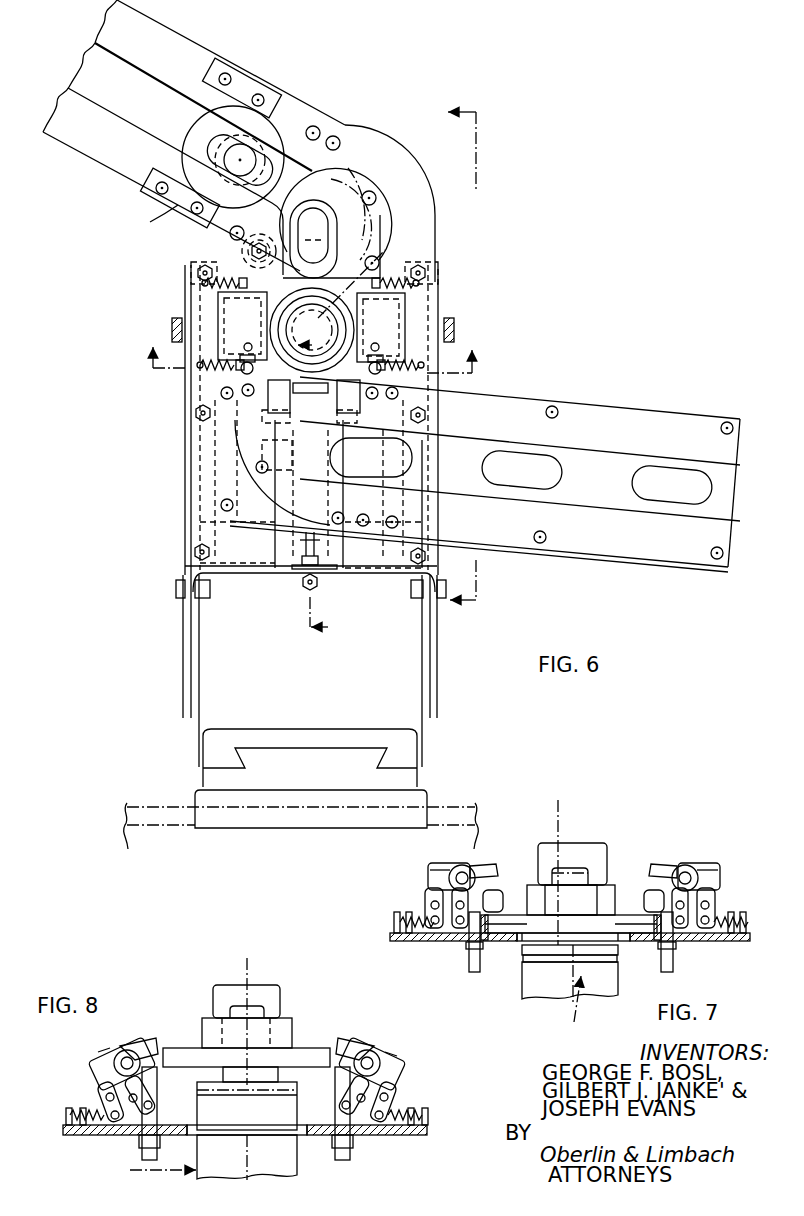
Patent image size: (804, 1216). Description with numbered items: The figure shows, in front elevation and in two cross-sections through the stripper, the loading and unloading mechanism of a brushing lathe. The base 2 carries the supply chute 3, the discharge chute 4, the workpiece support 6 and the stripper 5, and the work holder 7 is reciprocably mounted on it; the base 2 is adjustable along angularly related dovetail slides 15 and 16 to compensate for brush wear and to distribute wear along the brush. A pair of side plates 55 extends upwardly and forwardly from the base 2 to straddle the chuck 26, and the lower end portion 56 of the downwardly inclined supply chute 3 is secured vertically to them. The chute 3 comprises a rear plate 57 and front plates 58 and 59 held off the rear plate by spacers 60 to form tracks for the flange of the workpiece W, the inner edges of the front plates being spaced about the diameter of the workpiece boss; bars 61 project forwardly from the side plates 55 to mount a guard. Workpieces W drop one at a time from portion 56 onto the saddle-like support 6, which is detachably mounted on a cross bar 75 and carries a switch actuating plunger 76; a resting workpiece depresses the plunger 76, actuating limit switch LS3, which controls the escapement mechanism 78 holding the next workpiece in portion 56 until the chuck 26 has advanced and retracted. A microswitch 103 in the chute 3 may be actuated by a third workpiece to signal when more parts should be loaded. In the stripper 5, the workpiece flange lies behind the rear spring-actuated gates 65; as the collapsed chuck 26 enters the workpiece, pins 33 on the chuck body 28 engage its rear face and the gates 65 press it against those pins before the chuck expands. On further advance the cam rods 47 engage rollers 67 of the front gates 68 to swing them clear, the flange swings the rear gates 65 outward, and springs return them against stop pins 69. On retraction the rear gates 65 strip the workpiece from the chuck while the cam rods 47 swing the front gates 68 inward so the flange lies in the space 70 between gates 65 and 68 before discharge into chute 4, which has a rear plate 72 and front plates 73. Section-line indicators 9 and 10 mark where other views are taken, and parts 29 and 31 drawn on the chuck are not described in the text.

In FIG. 6, the base 2 is at (440, 667).
In FIG. 7, the base 2 is at (434, 945).
In FIG. 8, the base 2 is at (392, 1138).
In FIG. 6, the supply chute 3 is at (308, 108).
In FIG. 6, the discharge chute 4 is at (520, 396).
In FIG. 6, the stripper 5 is at (243, 321).
In FIG. 7, the stripper 5 is at (427, 878).
In FIG. 8, the stripper 5 is at (93, 1076).
In FIG. 6, the workpiece support 6 is at (293, 397).
In FIG. 6, the work holder 7 is at (311, 364).
In FIG. 7, the work holder 7 is at (567, 1014).
In FIG. 8, the work holder 7 is at (157, 1171).
In FIG. 6, the section line 9- 9 is at (341, 447).
In FIG. 6, the section line 10- 10 is at (480, 359).
In FIG. 6, the dovetail slide 15 is at (340, 754).
In FIG. 6, the dovetail slide 16 is at (358, 830).
In FIG. 7, the chuck 26 is at (595, 900).
In FIG. 8, the chuck 26 is at (268, 1044).
In FIG. 7, the chuck body 28 is at (525, 958).
In FIG. 8, the chuck body 28 is at (215, 1092).
In FIG. 7, the chuck cap 29 is at (583, 866).
In FIG. 8, the chuck cap 29 is at (212, 1040).
In FIG. 7, the axis 31 is at (558, 840).
In FIG. 8, the axis 31 is at (247, 980).
In FIG. 7, the pins 33 is at (608, 938).
In FIG. 8, the pins 33 is at (285, 1064).
In FIG. 6, the cam rods 47 is at (447, 402).
In FIG. 7, the cam rods 47 is at (470, 950).
In FIG. 8, the cam rods 47 is at (157, 1150).
In FIG. 6, the side plates 55 is at (245, 370).
In FIG. 6, the lower end portion of supply chute 56 is at (352, 190).
In FIG. 6, the rear plate 57 is at (313, 184).
In FIG. 6, the front plate 58 is at (175, 218).
In FIG. 6, the front plate 59 is at (380, 230).
In FIG. 6, the spacers 60 is at (340, 140).
In FIG. 6, the bars 61 is at (172, 326).
In FIG. 6, the rear stripper parts or gates 65 is at (218, 300).
In FIG. 7, the rear stripper parts or gates 65 is at (571, 923).
In FIG. 8, the rear stripper parts or gates 65 is at (150, 1073).
In FIG. 6, the rollers 67 is at (225, 367).
In FIG. 7, the rollers 67 is at (465, 865).
In FIG. 8, the rollers 67 is at (135, 1042).
In FIG. 6, the front stripper parts or gates 68 is at (252, 283).
In FIG. 7, the front stripper parts or gates 68 is at (446, 863).
In FIG. 8, the front stripper parts or gates 68 is at (96, 1058).
In FIG. 7, the stop pins 69 is at (490, 905).
In FIG. 7, the space 70 is at (490, 866).
In FIG. 6, the rear plate 72 is at (603, 462).
In FIG. 6, the front plates 73 is at (676, 422).
In FIG. 6, the cross bar 75 is at (358, 420).
In FIG. 6, the switch actuating plunger 76 is at (371, 457).
In FIG. 6, the escapement mechanism 78 is at (313, 241).
In FIG. 6, the microswitch 103 is at (175, 180).
In FIG. 6, the workpiece W is at (414, 166).
In FIG. 7, the workpiece W is at (607, 855).
In FIG. 8, the workpiece W is at (283, 1000).
In FIG. 6, the limit switch LS3 is at (260, 447).